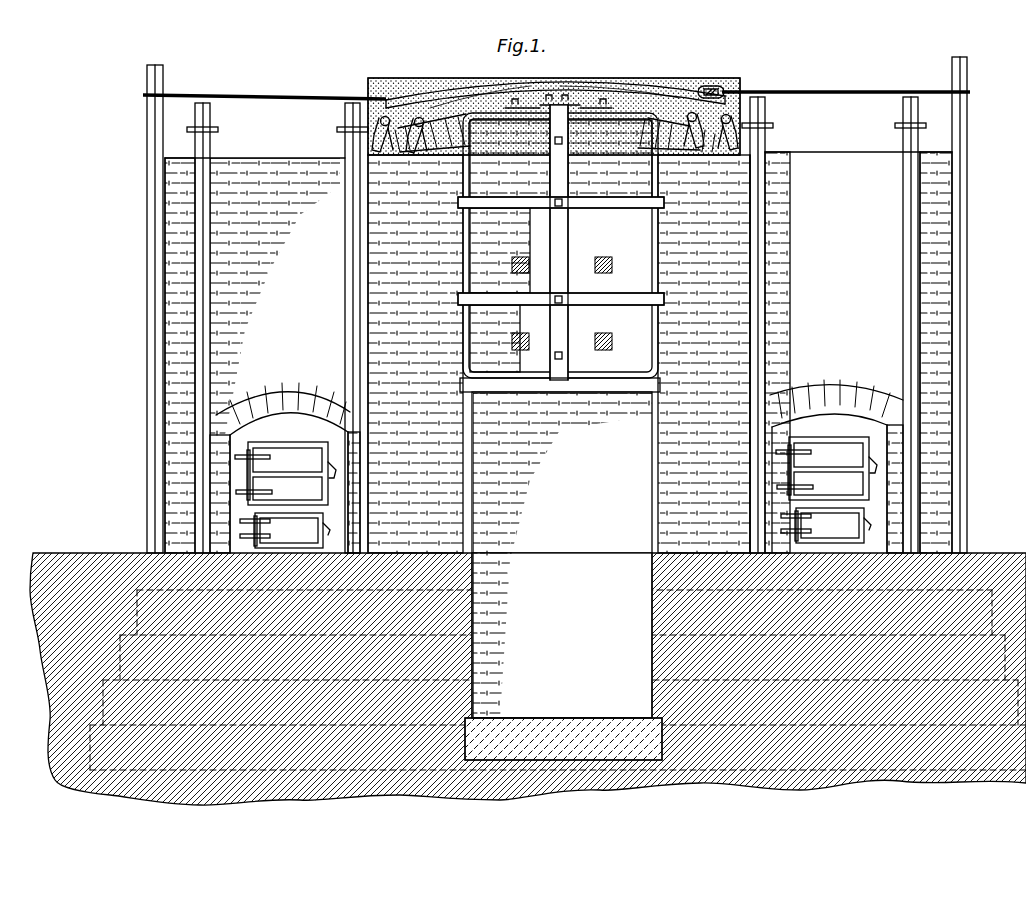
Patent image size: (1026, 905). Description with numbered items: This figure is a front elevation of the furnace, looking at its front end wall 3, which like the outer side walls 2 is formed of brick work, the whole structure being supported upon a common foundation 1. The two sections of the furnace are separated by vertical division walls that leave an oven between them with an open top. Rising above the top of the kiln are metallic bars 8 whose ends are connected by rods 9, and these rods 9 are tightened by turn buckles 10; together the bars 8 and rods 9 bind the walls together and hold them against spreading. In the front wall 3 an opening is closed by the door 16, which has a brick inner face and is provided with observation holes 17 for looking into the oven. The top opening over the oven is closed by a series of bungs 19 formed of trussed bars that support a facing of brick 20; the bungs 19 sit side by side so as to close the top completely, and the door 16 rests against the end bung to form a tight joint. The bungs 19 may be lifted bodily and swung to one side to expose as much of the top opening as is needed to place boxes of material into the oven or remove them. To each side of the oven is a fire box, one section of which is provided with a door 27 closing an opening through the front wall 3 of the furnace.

The foundation 1 is at (764, 788).
The outer side walls 2 is at (168, 318).
The front end wall 3 is at (836, 381).
The metallic bars 8 is at (157, 68).
The rods 9 is at (312, 93).
The turn buckles 10 is at (712, 86).
The door 16 is at (465, 242).
The observation holes 17 is at (530, 262).
The bungs 19 is at (606, 84).
The facing of brick 20 is at (395, 118).
The door 27 is at (287, 458).